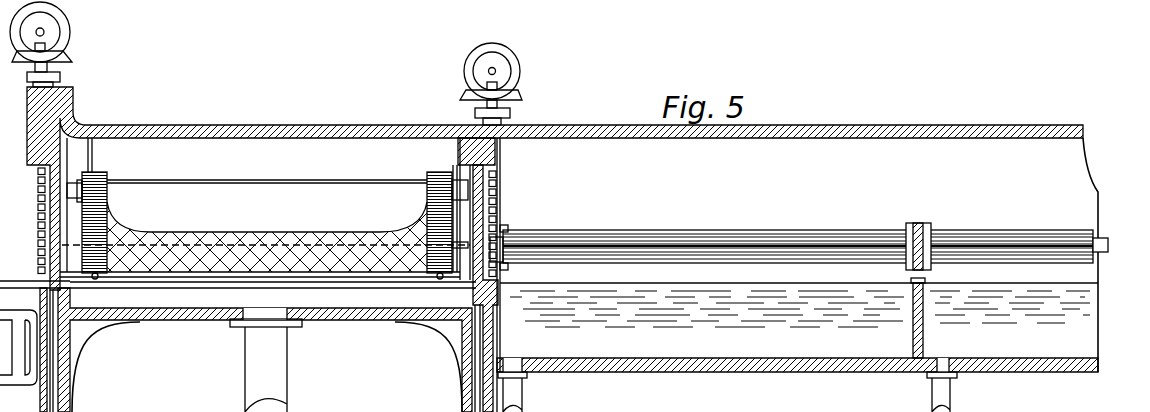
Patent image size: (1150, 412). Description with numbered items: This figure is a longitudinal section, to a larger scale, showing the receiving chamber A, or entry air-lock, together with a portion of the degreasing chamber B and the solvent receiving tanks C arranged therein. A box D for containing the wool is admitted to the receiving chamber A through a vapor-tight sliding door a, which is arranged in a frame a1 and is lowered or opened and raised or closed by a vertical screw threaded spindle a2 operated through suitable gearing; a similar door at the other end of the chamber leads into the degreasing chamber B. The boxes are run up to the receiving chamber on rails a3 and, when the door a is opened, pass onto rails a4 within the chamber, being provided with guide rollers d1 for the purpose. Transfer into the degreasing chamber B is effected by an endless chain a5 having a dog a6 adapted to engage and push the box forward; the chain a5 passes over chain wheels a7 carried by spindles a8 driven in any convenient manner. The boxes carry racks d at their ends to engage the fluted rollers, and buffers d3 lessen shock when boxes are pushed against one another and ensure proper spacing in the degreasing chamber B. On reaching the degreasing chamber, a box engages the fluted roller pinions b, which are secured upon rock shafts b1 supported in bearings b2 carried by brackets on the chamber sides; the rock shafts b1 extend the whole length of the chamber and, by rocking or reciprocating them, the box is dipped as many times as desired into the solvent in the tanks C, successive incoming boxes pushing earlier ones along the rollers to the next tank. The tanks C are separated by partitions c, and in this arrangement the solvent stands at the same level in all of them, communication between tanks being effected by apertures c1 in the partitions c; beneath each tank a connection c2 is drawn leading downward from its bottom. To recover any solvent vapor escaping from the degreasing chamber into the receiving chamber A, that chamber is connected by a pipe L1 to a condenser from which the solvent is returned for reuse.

The vapor-tight sliding door a is at (88, 160).
The door frame a1 is at (462, 403).
The vertical screw threaded spindle a2 is at (512, 200).
The rails a3 is at (35, 333).
The rails a4 is at (300, 283).
The endless chain a5 is at (282, 240).
The dog a6 is at (71, 212).
The chain wheel a7 is at (503, 228).
The spindle a8 is at (452, 172).
The fluted roller pinion b is at (798, 233).
The rock shaft b1 is at (1102, 246).
The bearing b2 is at (918, 223).
The partition c is at (912, 325).
The aperture c1 is at (926, 281).
The drain pipe c2 is at (960, 390).
The rack d is at (425, 203).
The guide roller d1 is at (97, 280).
The buffer d3 is at (518, 182).
The receiving chamber A is at (263, 159).
The degreasing chamber B is at (729, 187).
The solvent receiving tank C is at (799, 319).
The box D is at (263, 261).
The pipe L1 is at (266, 365).